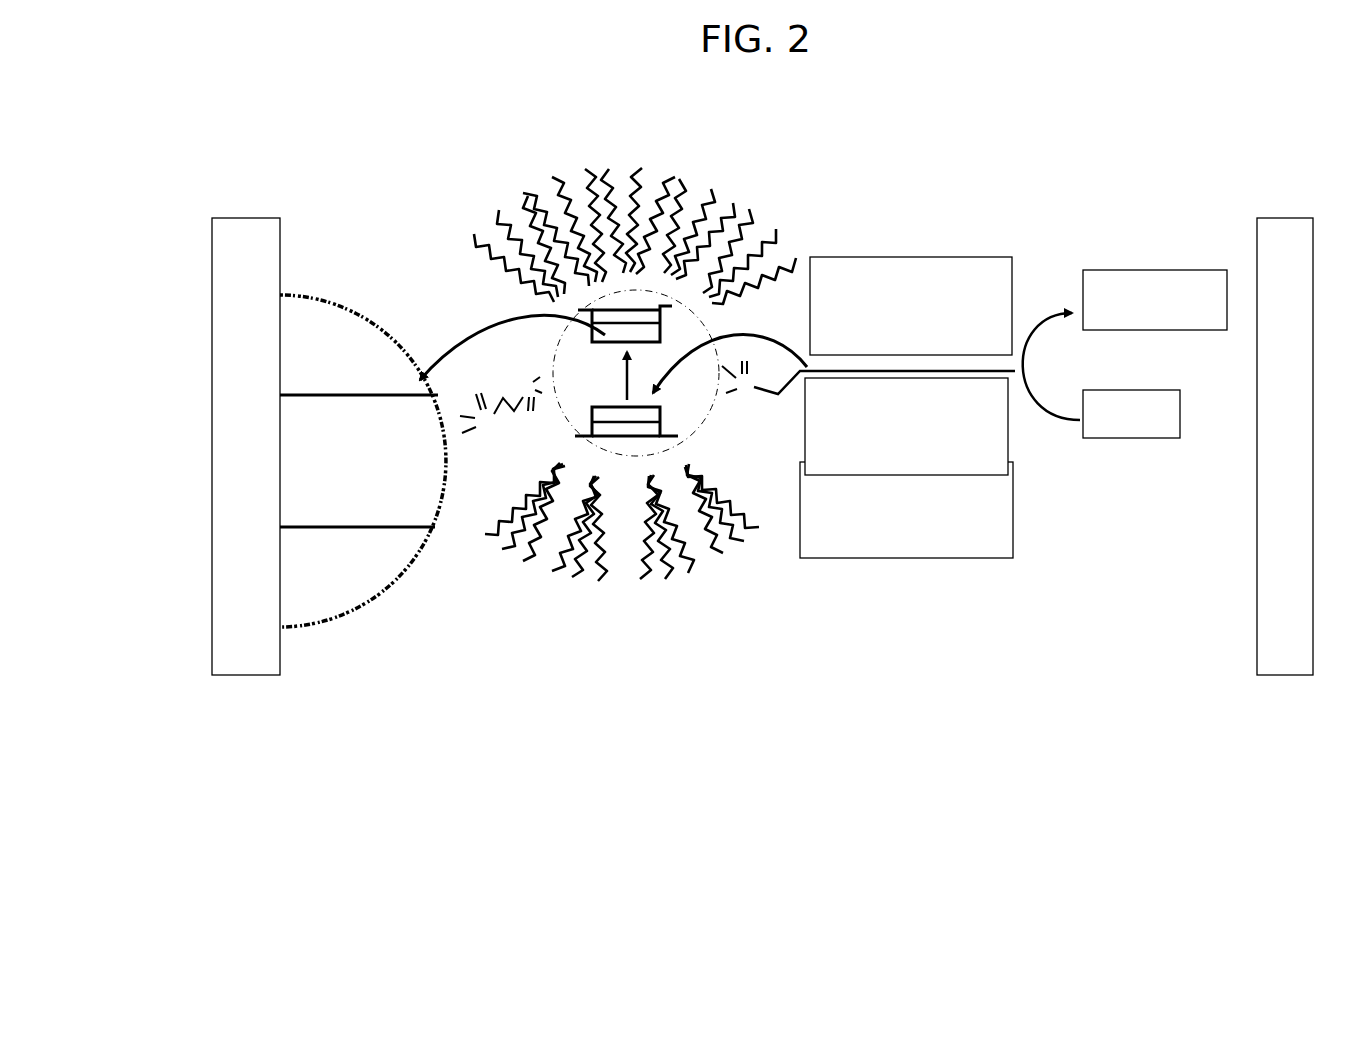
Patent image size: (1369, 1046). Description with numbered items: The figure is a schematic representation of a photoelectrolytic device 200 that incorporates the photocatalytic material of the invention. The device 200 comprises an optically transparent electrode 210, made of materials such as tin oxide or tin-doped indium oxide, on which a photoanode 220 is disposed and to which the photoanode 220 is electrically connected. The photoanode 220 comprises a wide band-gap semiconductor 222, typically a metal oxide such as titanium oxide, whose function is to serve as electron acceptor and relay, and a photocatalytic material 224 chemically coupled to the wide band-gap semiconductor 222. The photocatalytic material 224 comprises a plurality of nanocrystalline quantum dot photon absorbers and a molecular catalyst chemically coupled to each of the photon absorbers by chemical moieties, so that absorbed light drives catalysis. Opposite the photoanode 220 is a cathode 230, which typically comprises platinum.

The photoelectrolytic device 200 is at (790, 117).
The optically transparent electrode 210 is at (237, 275).
The photoanode 220 is at (1040, 740).
The wide band-gap semiconductor 222 is at (307, 333).
The photocatalytic material 224 is at (1005, 610).
The cathode 230 is at (1270, 262).